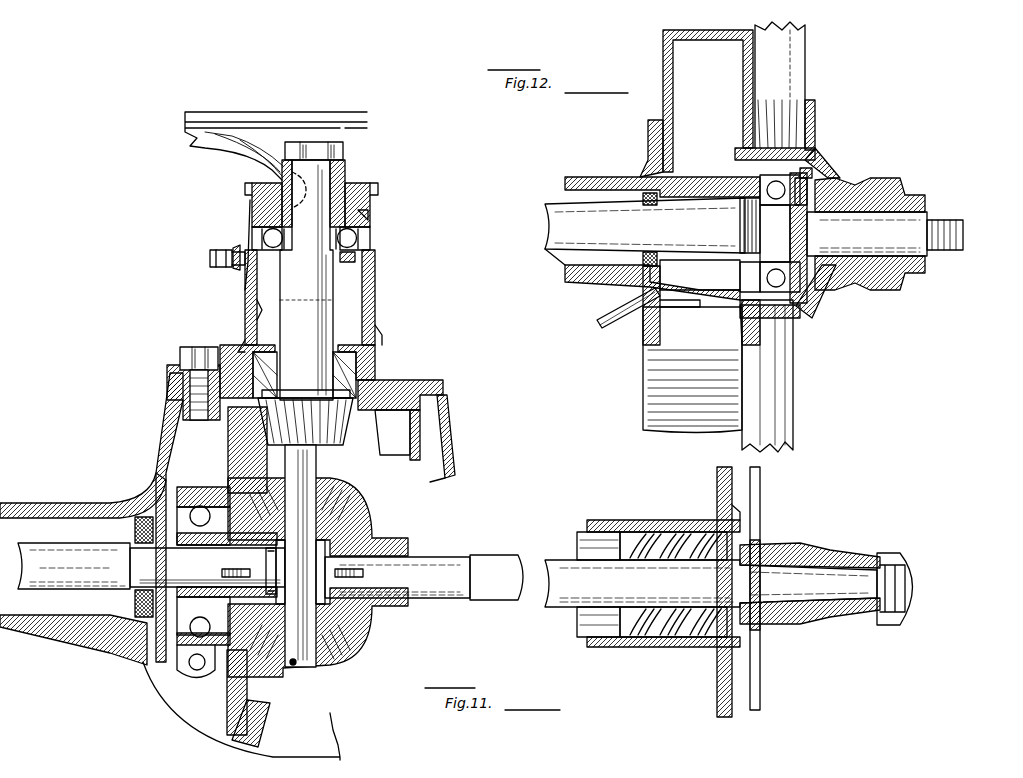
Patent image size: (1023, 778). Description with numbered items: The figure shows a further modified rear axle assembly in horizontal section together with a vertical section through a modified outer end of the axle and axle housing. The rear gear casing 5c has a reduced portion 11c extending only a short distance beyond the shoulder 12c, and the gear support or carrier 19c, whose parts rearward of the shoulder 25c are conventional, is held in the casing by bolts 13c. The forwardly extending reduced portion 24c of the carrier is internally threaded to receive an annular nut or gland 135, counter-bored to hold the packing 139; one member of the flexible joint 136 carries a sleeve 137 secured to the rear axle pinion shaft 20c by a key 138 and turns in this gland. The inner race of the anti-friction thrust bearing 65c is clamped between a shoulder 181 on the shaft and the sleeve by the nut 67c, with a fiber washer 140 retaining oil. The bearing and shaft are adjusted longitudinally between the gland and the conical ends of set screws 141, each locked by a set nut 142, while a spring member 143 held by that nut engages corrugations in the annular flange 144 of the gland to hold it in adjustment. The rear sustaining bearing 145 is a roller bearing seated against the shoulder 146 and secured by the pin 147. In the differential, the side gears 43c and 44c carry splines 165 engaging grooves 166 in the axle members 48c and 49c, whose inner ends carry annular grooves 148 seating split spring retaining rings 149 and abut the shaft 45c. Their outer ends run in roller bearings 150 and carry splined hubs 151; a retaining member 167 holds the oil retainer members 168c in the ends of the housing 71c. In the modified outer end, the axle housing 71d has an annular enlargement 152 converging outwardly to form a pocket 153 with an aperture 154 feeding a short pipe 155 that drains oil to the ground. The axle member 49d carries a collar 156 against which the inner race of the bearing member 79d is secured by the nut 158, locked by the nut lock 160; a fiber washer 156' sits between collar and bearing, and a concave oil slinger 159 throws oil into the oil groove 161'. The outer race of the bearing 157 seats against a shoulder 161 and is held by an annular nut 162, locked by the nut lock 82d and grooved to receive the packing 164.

In FIG. 11, the flexible joint member 136 is at (197, 138).
In FIG. 11, the key 138 is at (280, 178).
In FIG. 11, the nut 67c is at (318, 148).
In FIG. 11, the sleeve 137 is at (346, 172).
In FIG. 11, the rear axle pinion shaft 20c is at (320, 280).
In FIG. 11, the annular flange 144 is at (378, 196).
In FIG. 11, the annular nut or gland 135 is at (358, 192).
In FIG. 11, the spring member 143 is at (248, 215).
In FIG. 11, the packing 139 is at (372, 218).
In FIG. 11, the fiber washer 140 is at (372, 224).
In FIG. 11, the anti-friction thrust bearing 65c is at (372, 236).
In FIG. 11, the set screws 141 is at (212, 255).
In FIG. 11, the set nut 142 is at (222, 266).
In FIG. 11, the reduced portion of carrier 24c is at (372, 302).
In FIG. 11, the shoulder 146 is at (252, 312).
In FIG. 11, the pin 147 is at (248, 340).
In FIG. 11, the rear or sustaining bearing 145 is at (372, 328).
In FIG. 11, the shoulder on shaft 181 is at (296, 262).
In FIG. 11, the reduced portion of casing 11c is at (385, 345).
In FIG. 11, the shoulder of casing 12c is at (172, 374).
In FIG. 11, the bolts 13c is at (195, 346).
In FIG. 11, the shoulder of carrier 25c is at (418, 392).
In FIG. 11, the rear gear casing 5c is at (452, 436).
In FIG. 11, the gear support or carrier 19c is at (180, 438).
In FIG. 11, the axle member 48c is at (77, 578).
In FIG. 11, the splines 165 is at (235, 553).
In FIG. 11, the grooves 166 is at (222, 573).
In FIG. 11, the side gear 43c is at (275, 492).
In FIG. 11, the shaft 45c is at (292, 672).
In FIG. 11, the side gear 44c is at (372, 528).
In FIG. 11, the annular grooves 148 is at (282, 560).
In FIG. 11, the split spring retaining rings 149 is at (252, 556).
In FIG. 11, the axle member 49c is at (440, 592).
In FIG. 11, the axle housing 71c is at (690, 640).
In FIG. 11, the retaining member 167 is at (732, 516).
In FIG. 11, the roller bearings 150 is at (648, 632).
In FIG. 11, the hub 151 is at (808, 546).
In FIG. 11, the oil retainer members 168c is at (752, 640).
In FIG. 12, the shoulder 161 is at (727, 103).
In FIG. 12, the axle member 49d is at (596, 200).
In FIG. 12, the bearing 157 is at (818, 135).
In FIG. 12, the fiber washer 156' is at (837, 157).
In FIG. 12, the annular nut 162 is at (812, 180).
In FIG. 12, the oil slinger 159 is at (758, 190).
In FIG. 12, the nut lock 160 is at (752, 202).
In FIG. 12, the bearing member 79d is at (770, 205).
In FIG. 12, the collar 156 is at (885, 234).
In FIG. 12, the packing 164 is at (838, 280).
In FIG. 12, the nut lock 82d is at (822, 305).
In FIG. 12, the axle housing 71d is at (580, 280).
In FIG. 12, the aperture 154 is at (686, 282).
In FIG. 12, the nut 158 is at (748, 270).
In FIG. 12, the pocket 153 is at (698, 292).
In FIG. 12, the annular enlargement 152 is at (736, 306).
In FIG. 12, the pipe 155 is at (606, 326).
In FIG. 12, the oil groove 161' is at (718, 376).